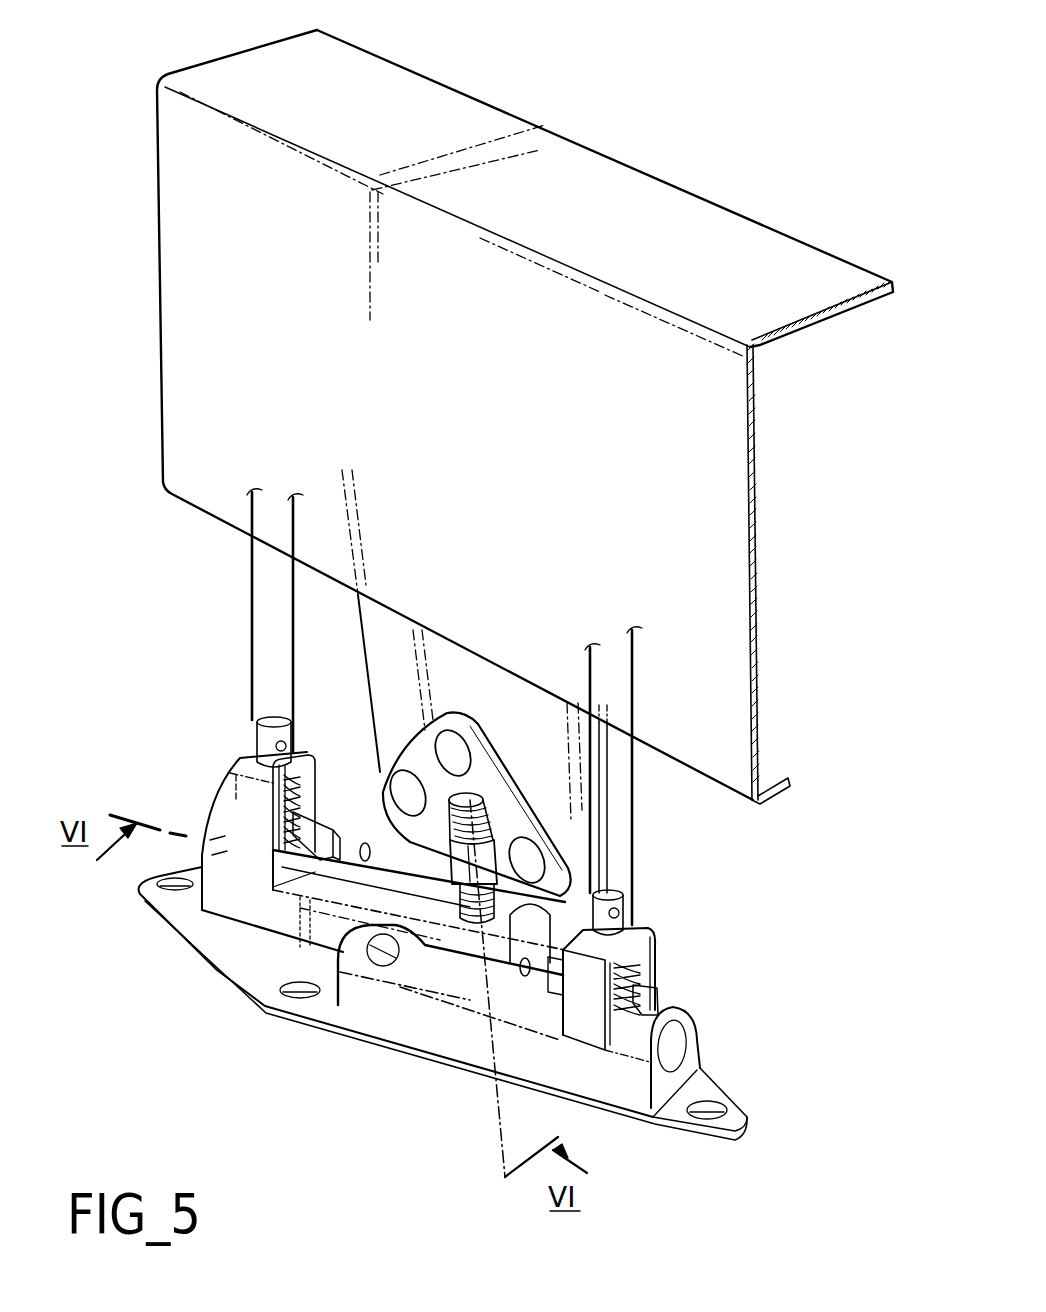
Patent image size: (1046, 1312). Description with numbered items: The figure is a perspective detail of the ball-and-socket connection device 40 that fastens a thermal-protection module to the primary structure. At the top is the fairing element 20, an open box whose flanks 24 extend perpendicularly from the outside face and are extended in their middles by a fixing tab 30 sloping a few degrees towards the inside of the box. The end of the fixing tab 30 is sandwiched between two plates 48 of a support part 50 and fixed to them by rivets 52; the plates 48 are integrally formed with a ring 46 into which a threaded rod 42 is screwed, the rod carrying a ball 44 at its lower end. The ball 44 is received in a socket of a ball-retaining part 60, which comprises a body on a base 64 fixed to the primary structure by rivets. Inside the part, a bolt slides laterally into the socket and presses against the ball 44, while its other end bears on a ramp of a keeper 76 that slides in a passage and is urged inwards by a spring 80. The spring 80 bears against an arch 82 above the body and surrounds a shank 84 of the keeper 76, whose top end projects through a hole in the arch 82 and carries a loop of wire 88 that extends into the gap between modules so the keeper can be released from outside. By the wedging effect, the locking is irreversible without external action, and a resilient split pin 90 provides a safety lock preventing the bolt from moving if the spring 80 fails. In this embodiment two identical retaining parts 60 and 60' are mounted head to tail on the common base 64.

The fairing element 20 is at (479, 422).
The flanks 24 is at (190, 370).
The fixing tab 30 is at (383, 628).
The ball-and-socket connection device 40 is at (647, 912).
The threaded rod 42 is at (487, 813).
The ball 44 is at (455, 905).
The ring 46 is at (480, 857).
The plates 48 is at (470, 712).
The support part 50 is at (441, 747).
The rivets 52 is at (560, 853).
The ball-retaining part 60 is at (231, 837).
The ball-retaining part 60' is at (526, 1003).
The base 64 is at (247, 968).
The keeper 76 is at (320, 837).
The spring 80 is at (300, 793).
The arch 82 is at (243, 800).
The shank 84 is at (268, 760).
The loop of wire 88 is at (250, 593).
The resilient split pin 90 is at (366, 843).